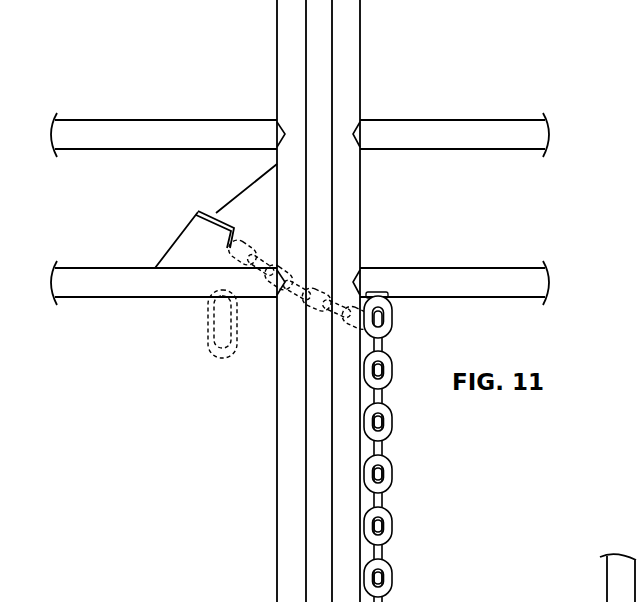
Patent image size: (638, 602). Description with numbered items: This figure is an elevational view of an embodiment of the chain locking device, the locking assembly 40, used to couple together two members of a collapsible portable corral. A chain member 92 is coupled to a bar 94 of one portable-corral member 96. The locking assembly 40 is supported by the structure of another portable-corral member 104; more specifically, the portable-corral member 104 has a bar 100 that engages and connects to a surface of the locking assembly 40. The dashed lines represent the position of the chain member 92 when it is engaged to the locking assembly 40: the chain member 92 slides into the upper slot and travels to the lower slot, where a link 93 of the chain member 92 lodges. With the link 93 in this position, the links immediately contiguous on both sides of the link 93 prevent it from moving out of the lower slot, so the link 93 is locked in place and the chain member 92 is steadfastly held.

The portable-corral member 104 is at (158, 117).
The portable-corral member 96 is at (432, 100).
The bar 100 is at (123, 294).
The bar 94 is at (463, 275).
The locking assembly 40 is at (232, 197).
The link 93 is at (208, 212).
The chain member 92 is at (270, 312).